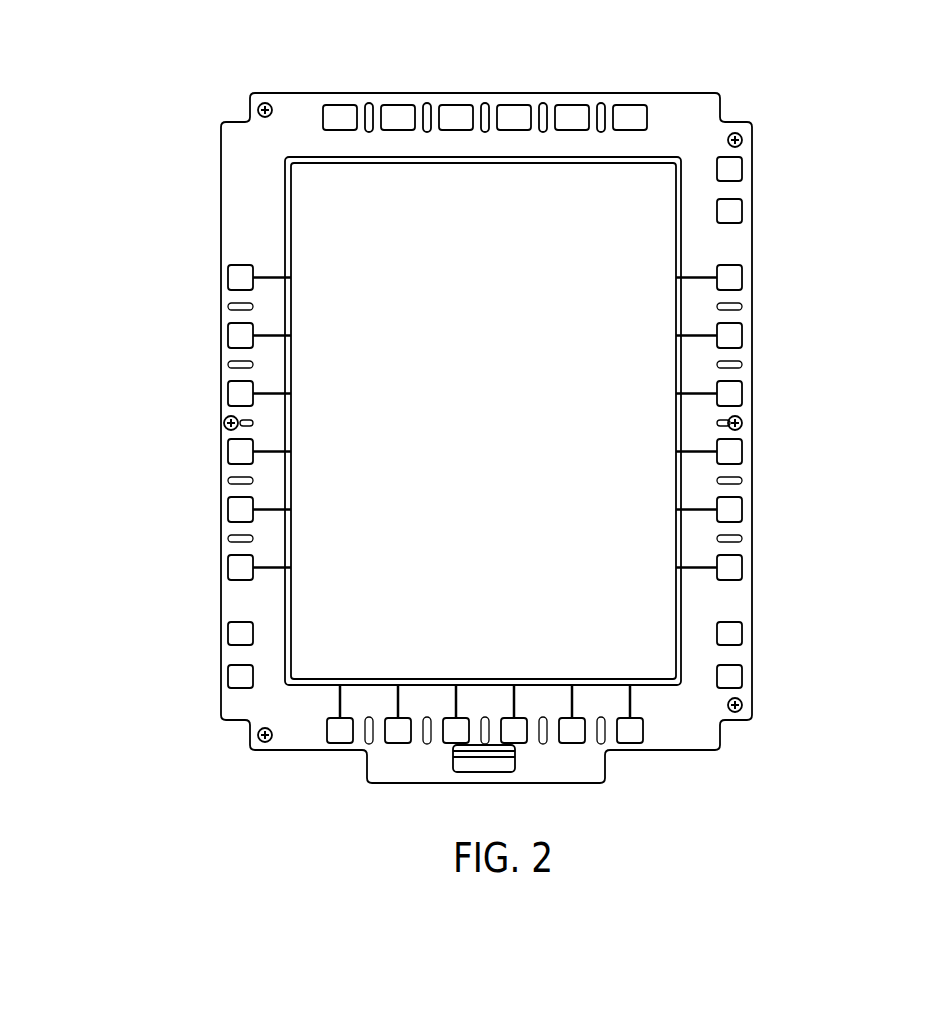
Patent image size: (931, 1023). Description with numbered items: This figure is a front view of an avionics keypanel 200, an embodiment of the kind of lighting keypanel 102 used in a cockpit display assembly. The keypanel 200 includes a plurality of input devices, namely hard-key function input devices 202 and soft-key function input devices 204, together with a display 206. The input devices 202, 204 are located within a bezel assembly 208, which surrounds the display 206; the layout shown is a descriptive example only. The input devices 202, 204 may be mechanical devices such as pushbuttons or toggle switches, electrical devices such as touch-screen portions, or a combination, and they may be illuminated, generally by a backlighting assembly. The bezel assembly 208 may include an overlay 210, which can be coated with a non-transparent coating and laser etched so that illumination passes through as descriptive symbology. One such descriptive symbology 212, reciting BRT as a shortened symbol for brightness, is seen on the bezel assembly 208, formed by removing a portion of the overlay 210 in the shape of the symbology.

The avionics keypanel 200 is at (92, 129).
The lighting keypanel 102 is at (221, 205).
The hard-key function input devices 202 is at (397, 103).
The soft-key function input devices 204 is at (228, 330).
The display 206 is at (650, 672).
The bezel assembly 208 is at (221, 600).
The overlay 210 is at (252, 713).
The descriptive symbology 212 is at (698, 180).